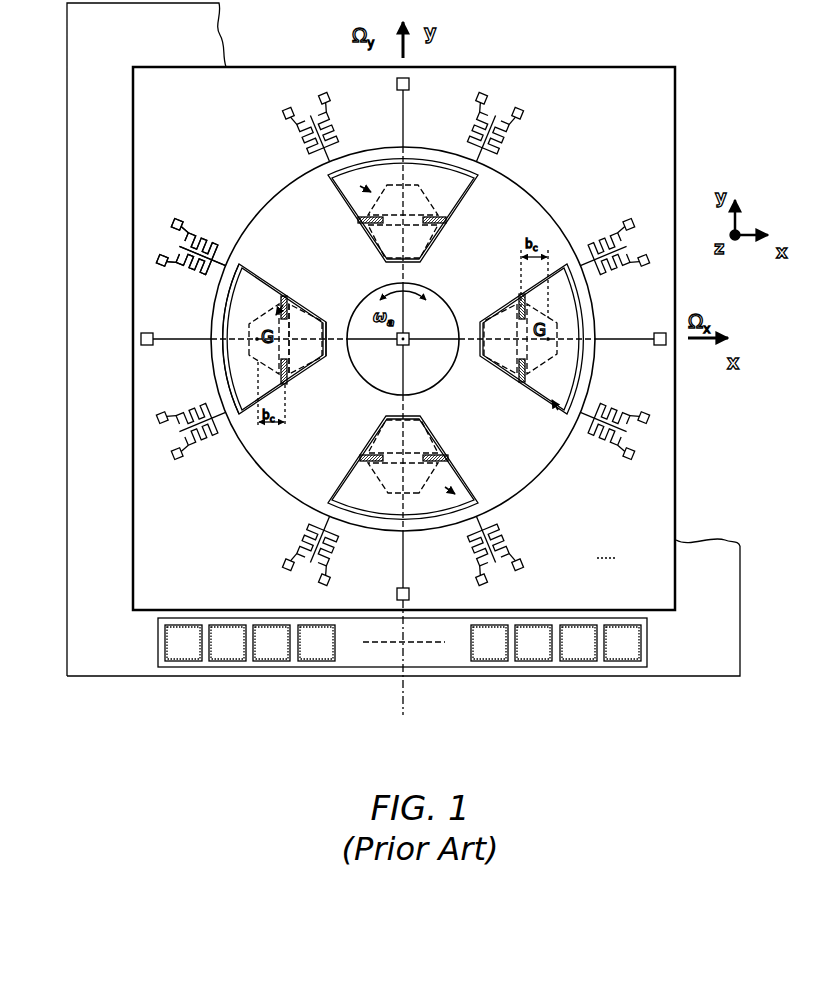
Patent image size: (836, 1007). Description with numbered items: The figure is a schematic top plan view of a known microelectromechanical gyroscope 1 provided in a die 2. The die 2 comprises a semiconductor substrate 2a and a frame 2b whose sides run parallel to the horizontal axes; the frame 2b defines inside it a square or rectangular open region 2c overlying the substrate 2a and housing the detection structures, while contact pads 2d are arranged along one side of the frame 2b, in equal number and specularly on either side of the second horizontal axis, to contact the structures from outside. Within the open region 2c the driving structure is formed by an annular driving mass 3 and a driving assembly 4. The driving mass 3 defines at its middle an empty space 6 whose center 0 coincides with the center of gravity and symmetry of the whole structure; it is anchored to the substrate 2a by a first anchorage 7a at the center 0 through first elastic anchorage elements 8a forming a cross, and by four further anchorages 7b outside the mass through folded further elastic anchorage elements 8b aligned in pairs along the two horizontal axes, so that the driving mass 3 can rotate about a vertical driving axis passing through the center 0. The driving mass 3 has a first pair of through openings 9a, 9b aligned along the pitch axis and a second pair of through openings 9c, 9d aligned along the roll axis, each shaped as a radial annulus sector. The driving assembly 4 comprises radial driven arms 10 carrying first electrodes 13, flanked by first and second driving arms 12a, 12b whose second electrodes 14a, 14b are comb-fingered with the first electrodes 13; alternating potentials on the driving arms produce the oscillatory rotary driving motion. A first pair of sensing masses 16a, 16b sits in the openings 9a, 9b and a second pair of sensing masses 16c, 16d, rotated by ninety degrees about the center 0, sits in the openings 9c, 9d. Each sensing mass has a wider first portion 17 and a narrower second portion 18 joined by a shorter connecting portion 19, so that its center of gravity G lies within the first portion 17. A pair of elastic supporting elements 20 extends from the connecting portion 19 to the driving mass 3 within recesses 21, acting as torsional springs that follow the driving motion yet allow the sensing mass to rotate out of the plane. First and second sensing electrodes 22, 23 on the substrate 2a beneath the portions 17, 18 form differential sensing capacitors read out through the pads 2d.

The gyroscope 1 is at (728, 72).
The die 2 is at (62, 582).
The substrate 2a is at (604, 549).
The frame 2b is at (730, 578).
The open region 2c is at (668, 514).
The contact pads 2d is at (183, 661).
The driving mass 3 is at (283, 196).
The driving assembly 4 is at (213, 168).
The empty space 6 is at (436, 371).
The first anchorage 7a is at (398, 343).
The further anchorages 7b is at (410, 85).
The first elastic anchorage elements 8a is at (412, 337).
The further elastic anchorage elements 8b is at (406, 119).
The through opening 9a is at (284, 302).
The through opening 9b is at (560, 404).
The through opening 9c is at (360, 196).
The through opening 9d is at (450, 486).
The driven arms 10 is at (232, 242).
The first driving arms 12a is at (188, 270).
The second driving arms 12b is at (206, 244).
The first electrodes 13 is at (215, 265).
The second electrodes 14a is at (168, 260).
The second electrodes 14b is at (181, 215).
The sensing mass 16a is at (262, 289).
The sensing mass 16b is at (538, 384).
The sensing mass 16c is at (379, 176).
The sensing mass 16d is at (383, 514).
The first portion 17 is at (236, 378).
The second portion 18 is at (327, 350).
The connecting portion 19 is at (288, 350).
The elastic supporting elements 20 is at (289, 302).
The recesses 21 is at (288, 384).
The first sensing electrode 22 is at (268, 315).
The second sensing electrode 23 is at (322, 326).
The center O 0 is at (409, 350).